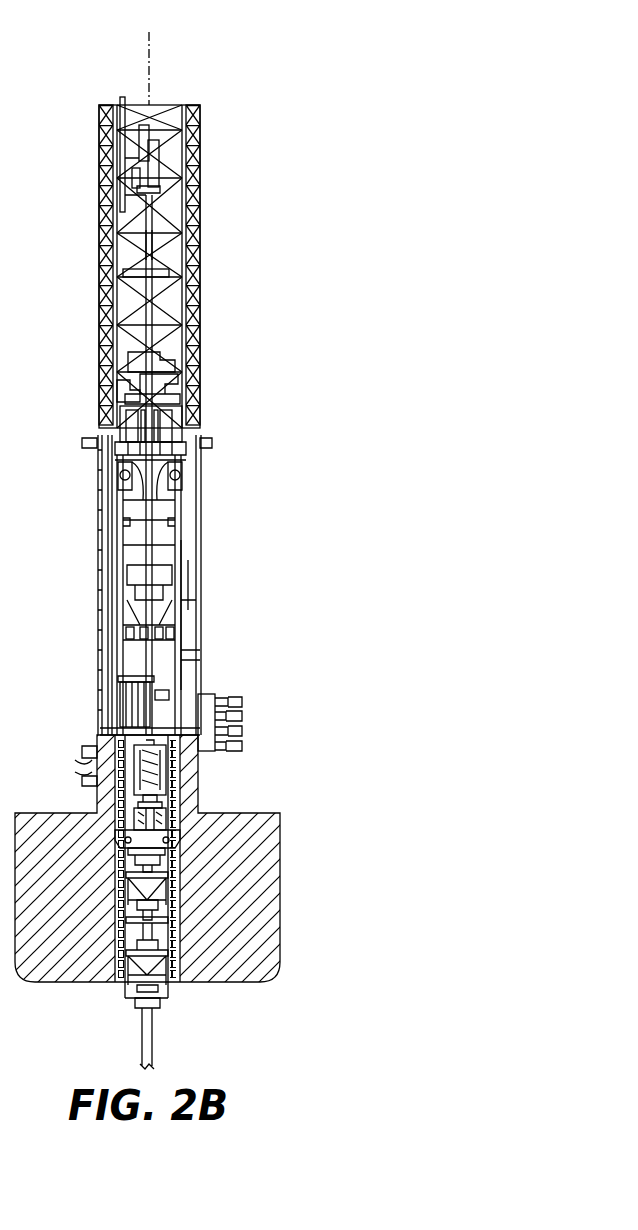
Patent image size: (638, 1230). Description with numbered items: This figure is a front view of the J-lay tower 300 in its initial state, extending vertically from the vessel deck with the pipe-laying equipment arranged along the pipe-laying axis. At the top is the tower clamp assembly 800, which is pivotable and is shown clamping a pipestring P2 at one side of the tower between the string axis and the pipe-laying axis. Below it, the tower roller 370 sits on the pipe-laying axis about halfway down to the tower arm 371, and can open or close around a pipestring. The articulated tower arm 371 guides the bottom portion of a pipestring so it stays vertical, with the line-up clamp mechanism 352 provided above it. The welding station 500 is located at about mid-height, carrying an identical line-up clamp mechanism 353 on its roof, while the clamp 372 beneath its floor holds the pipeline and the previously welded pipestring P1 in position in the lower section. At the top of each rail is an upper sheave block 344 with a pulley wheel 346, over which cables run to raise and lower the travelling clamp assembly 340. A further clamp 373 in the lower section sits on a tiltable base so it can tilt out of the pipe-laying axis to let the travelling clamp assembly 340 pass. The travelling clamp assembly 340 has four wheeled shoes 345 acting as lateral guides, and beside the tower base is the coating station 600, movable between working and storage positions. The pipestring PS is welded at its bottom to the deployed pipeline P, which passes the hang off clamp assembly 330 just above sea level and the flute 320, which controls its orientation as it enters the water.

The J-lay tower 300 is at (210, 144).
The tower clamp assembly 800 is at (128, 171).
The pipestring P2 is at (150, 242).
The tower roller 370 is at (170, 271).
The line-up clamp mechanism 352 is at (166, 372).
The tower arm 371 is at (122, 392).
The line-up clamp mechanism 353 is at (164, 398).
The welding station 500 is at (158, 432).
The pulley wheel 346 is at (176, 472).
The upper sheave block 344 is at (178, 488).
The clamp 372 is at (120, 498).
The pipestring P1 is at (158, 530).
The clamp 373 is at (136, 572).
The pipestring PS is at (165, 708).
The coating station 600 is at (131, 700).
The shoes 345 is at (90, 782).
The travelling clamp assembly 340 is at (156, 770).
The hang off clamp assembly 330 is at (154, 812).
The flute 320 is at (160, 916).
The deployed pipeline P is at (146, 1040).